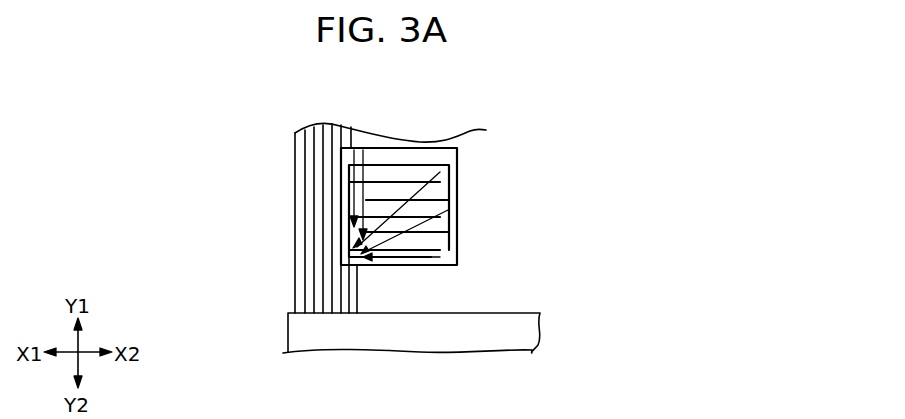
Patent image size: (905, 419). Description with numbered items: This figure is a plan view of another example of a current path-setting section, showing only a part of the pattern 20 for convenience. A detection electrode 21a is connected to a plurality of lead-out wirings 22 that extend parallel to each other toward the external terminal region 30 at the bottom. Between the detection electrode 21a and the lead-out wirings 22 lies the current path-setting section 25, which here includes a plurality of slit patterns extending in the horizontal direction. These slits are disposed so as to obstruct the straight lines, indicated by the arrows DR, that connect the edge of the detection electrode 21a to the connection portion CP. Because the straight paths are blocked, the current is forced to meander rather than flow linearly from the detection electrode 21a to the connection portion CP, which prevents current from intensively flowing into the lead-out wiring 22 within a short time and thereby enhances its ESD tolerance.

The pattern 20 is at (256, 127).
The detection electrode 21a is at (446, 142).
The lead-out wiring 22 is at (300, 189).
The current path-setting section 25 is at (430, 180).
The external terminal region 30 is at (292, 333).
The connection portion CP is at (366, 288).
The arrows indicating straight lines DR is at (374, 160).